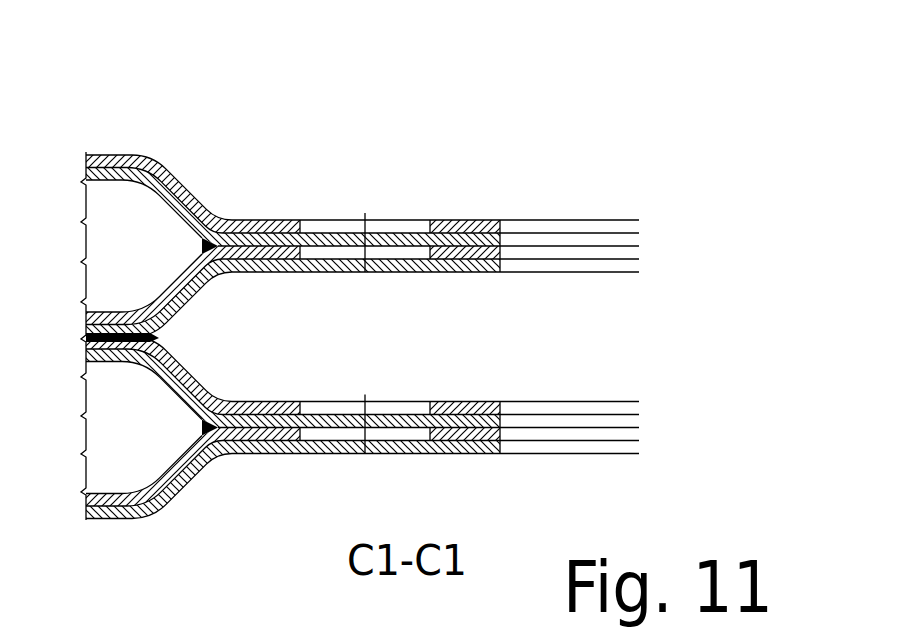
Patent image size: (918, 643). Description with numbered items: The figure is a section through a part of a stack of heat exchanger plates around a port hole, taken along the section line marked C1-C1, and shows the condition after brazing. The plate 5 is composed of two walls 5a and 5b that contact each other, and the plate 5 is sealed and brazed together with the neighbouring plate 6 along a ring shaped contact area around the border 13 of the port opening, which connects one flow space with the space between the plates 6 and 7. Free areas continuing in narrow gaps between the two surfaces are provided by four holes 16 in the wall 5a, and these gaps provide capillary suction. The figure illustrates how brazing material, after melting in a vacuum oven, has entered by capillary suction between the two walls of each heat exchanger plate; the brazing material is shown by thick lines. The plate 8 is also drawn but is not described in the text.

The plate 5 is at (179, 177).
The wall 5a is at (277, 219).
The wall 5b is at (383, 237).
The plate 6 is at (178, 316).
The plate 7 is at (179, 398).
The lower web of second laminate 8 is at (199, 472).
The border of the port opening 13 is at (503, 221).
The holes 16 is at (343, 243).